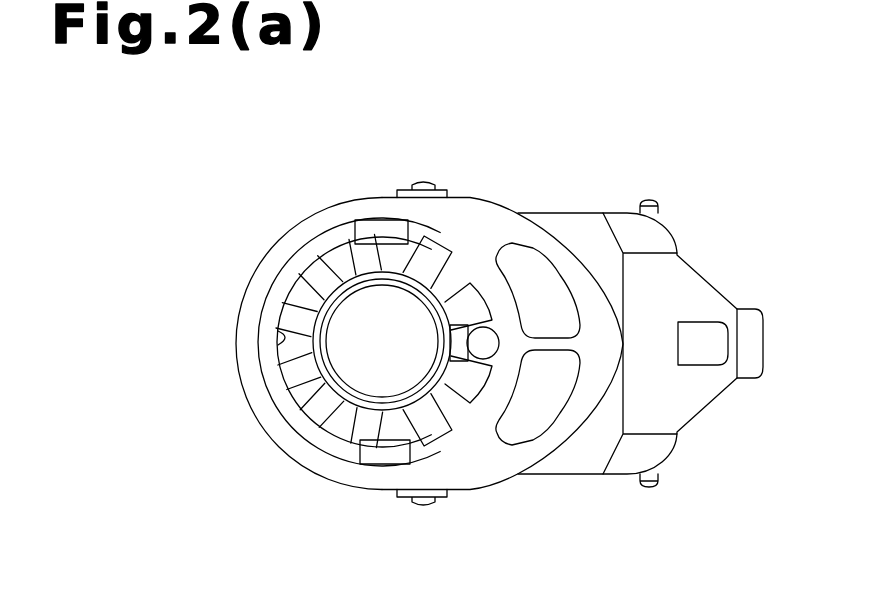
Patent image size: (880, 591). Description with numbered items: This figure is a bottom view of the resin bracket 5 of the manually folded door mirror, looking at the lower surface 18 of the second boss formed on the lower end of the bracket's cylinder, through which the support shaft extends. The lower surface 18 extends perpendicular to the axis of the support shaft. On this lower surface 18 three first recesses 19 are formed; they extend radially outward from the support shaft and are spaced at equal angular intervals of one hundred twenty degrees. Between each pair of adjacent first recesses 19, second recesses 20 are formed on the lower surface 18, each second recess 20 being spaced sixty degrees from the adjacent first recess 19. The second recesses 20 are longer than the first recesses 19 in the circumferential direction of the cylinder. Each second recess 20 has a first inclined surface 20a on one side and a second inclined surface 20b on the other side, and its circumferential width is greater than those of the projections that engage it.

The bracket 5 is at (714, 165).
The lower surface 18 is at (460, 265).
The first recesses 19 is at (440, 245).
The second recesses 20 is at (340, 258).
The first inclined surface 20a is at (363, 253).
The second inclined surface 20b is at (473, 282).